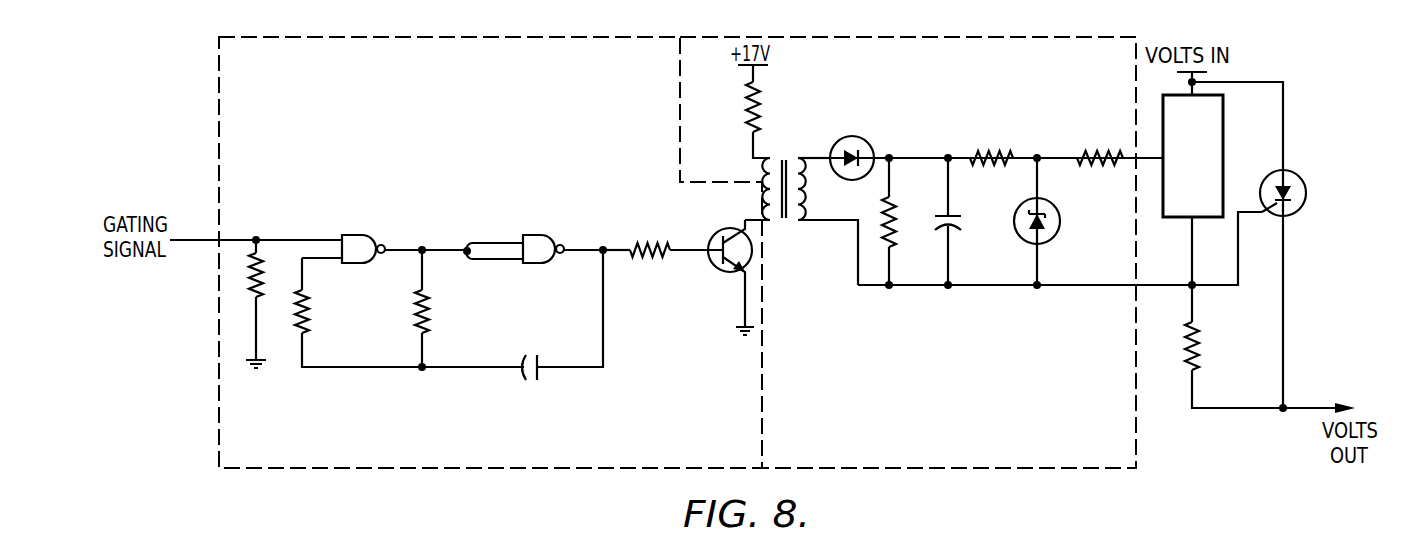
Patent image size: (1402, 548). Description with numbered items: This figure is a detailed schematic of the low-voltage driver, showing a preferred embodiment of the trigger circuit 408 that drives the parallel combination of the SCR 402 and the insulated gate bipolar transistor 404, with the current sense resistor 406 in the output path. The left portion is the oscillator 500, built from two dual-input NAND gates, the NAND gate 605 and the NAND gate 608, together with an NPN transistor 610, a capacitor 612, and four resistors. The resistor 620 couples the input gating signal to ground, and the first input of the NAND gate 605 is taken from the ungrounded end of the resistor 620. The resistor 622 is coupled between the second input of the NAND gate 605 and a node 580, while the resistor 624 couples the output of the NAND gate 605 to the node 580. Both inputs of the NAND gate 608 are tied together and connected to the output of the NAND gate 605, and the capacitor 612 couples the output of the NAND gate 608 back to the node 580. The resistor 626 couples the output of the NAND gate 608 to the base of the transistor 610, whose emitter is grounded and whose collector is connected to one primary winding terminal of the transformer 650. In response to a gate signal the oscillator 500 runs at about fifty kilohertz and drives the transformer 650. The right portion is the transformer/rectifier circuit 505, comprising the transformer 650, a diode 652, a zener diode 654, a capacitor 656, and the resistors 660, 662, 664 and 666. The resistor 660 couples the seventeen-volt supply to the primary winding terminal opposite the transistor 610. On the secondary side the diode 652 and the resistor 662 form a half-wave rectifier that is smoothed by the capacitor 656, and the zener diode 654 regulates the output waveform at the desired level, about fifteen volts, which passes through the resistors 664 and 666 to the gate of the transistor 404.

The SCR 402 is at (1299, 178).
The insulated gate bipolar transistor 404 is at (1223, 145).
The current sense resistor 406 is at (1200, 352).
The trigger circuit 408 is at (948, 33).
The oscillator 500 is at (462, 136).
The transformer/rectifier circuit 505 is at (945, 96).
The node 580 is at (422, 371).
The NAND gate 605 is at (358, 235).
The NAND gate 608 is at (548, 235).
The NPN transistor 610 is at (722, 272).
The capacitor 612 is at (537, 382).
The resistor 620 is at (250, 283).
The resistor 622 is at (306, 311).
The resistor 624 is at (427, 311).
The resistor 626 is at (655, 240).
The transformer 650 is at (767, 179).
The diode 652 is at (868, 142).
The zener diode 654 is at (1053, 206).
The capacitor 656 is at (954, 212).
The resistor 660 is at (759, 105).
The resistor 662 is at (894, 208).
The resistor 664 is at (983, 149).
The resistor 666 is at (1085, 149).